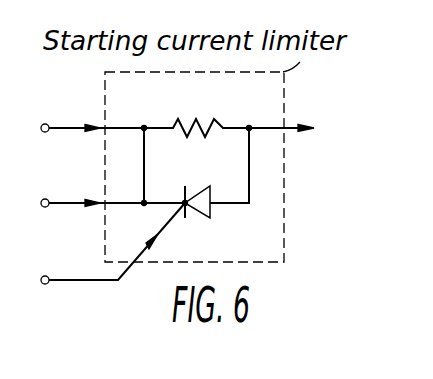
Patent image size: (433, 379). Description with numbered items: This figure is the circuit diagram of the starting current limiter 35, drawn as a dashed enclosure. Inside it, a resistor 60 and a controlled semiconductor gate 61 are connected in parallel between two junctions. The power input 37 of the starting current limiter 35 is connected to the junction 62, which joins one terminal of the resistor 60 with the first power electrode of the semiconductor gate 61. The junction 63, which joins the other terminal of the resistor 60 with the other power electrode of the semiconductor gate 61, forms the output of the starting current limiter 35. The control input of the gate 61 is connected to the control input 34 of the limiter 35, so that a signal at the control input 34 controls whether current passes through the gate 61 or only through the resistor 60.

The control input 34 is at (113, 243).
The starting current limiter 35 is at (284, 199).
The power input 37 is at (92, 148).
The resistor 60 is at (196, 107).
The controlled gate 61 is at (177, 219).
The junction 62 is at (147, 146).
The junction 63 is at (262, 146).